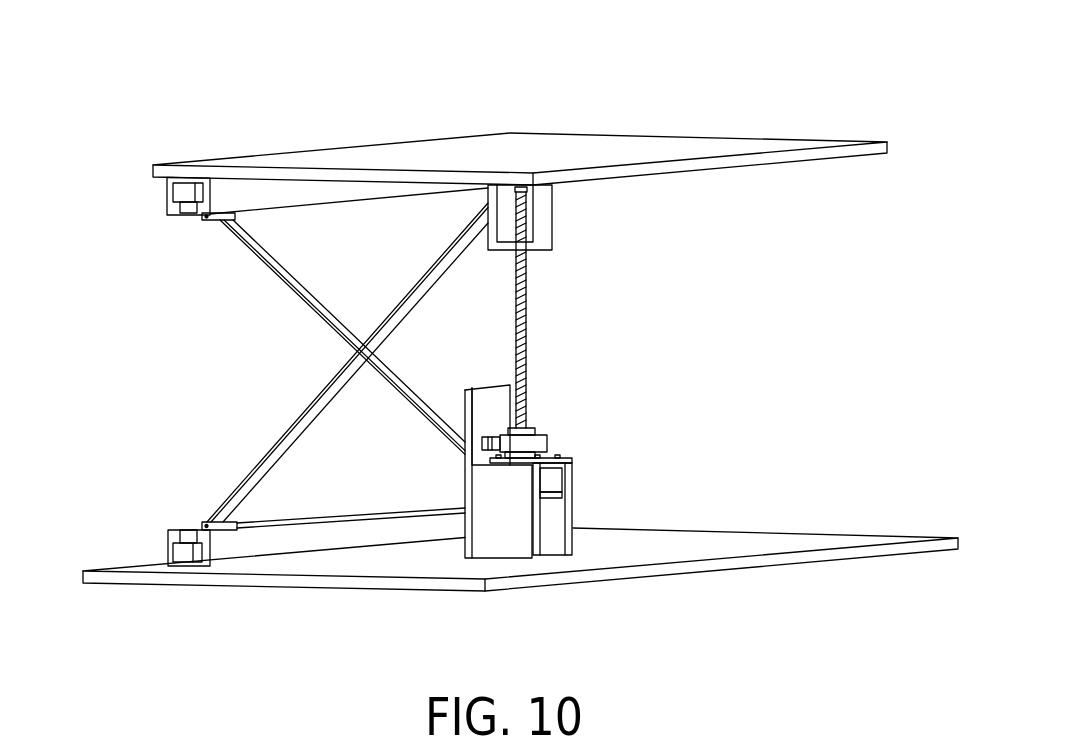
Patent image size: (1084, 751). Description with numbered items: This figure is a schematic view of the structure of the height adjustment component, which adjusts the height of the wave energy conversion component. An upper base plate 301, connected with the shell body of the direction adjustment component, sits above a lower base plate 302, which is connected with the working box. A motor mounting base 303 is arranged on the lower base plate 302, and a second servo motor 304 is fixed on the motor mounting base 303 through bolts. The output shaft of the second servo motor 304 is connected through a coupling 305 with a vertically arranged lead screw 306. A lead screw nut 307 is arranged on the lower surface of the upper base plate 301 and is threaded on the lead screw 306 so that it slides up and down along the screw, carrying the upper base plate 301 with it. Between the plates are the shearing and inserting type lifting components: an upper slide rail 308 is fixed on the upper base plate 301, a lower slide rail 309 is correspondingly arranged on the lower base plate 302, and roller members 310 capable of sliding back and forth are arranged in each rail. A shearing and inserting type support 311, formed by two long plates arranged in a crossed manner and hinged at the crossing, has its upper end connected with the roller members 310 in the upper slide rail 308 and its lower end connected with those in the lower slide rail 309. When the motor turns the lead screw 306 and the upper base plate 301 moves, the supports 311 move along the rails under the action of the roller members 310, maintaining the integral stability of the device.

The upper base plate 301 is at (610, 146).
The lower base plate 302 is at (724, 541).
The motor mounting base 303 is at (447, 471).
The second servo motor 304 is at (600, 537).
The coupling 305 is at (540, 447).
The lead screw 306 is at (530, 348).
The lead screw nut 307 is at (543, 203).
The upper slide rail 308 is at (235, 188).
The lower slide rail 309 is at (257, 540).
The roller members 310 is at (201, 216).
The shearing and inserting type support 311 is at (290, 275).